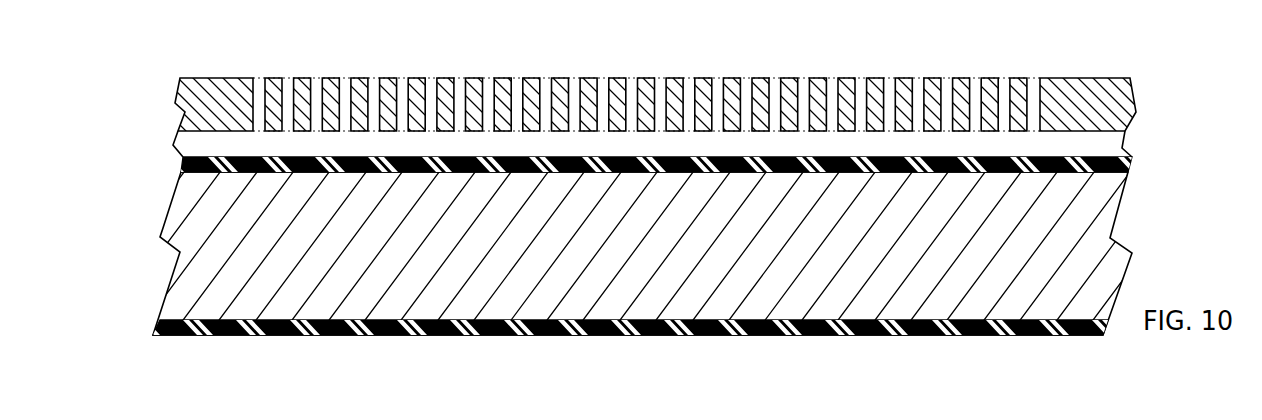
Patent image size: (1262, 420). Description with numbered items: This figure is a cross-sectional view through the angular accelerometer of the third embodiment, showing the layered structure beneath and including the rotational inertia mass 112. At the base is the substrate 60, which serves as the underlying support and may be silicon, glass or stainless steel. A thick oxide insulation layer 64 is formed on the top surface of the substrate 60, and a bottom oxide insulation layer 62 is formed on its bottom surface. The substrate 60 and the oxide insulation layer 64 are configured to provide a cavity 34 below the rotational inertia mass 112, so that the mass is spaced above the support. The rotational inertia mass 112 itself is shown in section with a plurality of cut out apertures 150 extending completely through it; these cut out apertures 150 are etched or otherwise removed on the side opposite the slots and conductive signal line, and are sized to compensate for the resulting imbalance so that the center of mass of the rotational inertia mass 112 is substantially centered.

The cut out apertures 150 is at (342, 87).
The rotational inertia mass 112 is at (735, 78).
The cavity 34 is at (864, 124).
The thick oxide insulation layer 64 is at (1133, 163).
The substrate 60 is at (1092, 265).
The bottom oxide insulation layer 62 is at (828, 335).